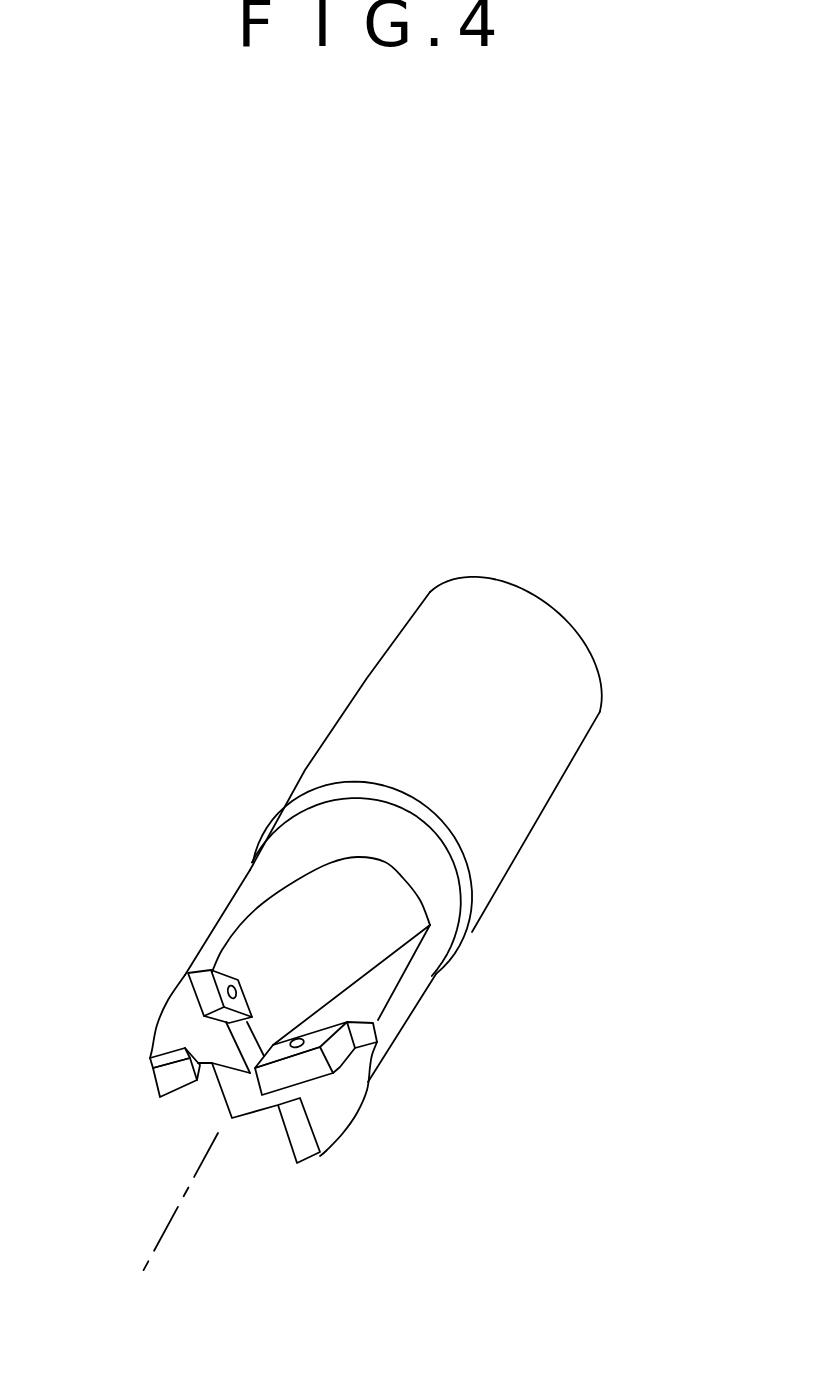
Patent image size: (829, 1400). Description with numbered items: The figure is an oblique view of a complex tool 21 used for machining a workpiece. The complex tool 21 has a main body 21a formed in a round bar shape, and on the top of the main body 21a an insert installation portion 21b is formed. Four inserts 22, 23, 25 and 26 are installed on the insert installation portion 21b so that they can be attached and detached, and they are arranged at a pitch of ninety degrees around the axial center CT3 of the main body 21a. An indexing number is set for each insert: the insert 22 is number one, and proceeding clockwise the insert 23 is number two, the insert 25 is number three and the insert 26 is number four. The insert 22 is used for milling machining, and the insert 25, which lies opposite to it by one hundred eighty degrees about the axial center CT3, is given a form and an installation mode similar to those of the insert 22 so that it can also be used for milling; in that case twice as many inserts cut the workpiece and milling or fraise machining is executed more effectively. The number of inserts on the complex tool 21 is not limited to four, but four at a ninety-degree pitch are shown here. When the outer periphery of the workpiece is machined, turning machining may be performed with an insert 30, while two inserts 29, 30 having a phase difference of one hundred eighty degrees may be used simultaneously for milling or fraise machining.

The complex tool 21 is at (331, 669).
The main body 21a is at (527, 795).
The insert installation portion 21b is at (397, 1015).
The insert 22 is at (305, 1072).
The insert 23 is at (305, 1152).
The insert 25 is at (150, 1082).
The insert 26 is at (200, 975).
The insert 29 is at (120, 1123).
The insert 30 is at (372, 1115).
The axial center CT3 is at (153, 1253).